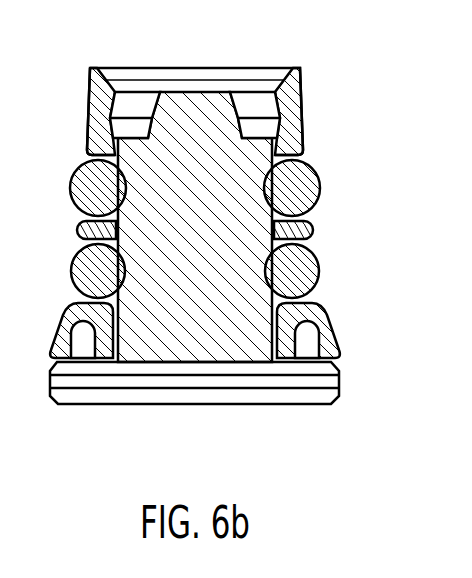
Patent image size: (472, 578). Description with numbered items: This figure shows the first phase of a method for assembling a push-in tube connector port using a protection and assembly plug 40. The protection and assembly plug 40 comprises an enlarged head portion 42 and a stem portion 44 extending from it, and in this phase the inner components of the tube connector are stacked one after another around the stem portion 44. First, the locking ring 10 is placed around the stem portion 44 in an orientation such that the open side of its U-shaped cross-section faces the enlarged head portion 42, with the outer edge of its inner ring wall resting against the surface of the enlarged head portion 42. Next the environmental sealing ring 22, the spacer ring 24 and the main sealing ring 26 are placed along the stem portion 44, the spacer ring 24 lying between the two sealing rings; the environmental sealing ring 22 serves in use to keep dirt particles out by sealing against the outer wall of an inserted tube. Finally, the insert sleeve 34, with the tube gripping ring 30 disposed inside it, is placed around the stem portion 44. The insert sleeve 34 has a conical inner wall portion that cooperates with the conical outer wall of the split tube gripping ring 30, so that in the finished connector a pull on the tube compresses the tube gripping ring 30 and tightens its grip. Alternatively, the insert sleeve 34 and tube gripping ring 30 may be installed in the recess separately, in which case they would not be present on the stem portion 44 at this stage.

The locking ring 10 is at (333, 331).
The environmental sealing ring 22 is at (320, 271).
The spacer ring 24 is at (313, 230).
The main sealing ring 26 is at (320, 187).
The tube gripping ring 30 is at (284, 70).
The insert sleeve 34 is at (302, 99).
The protection and assembly plug 40 is at (107, 442).
The enlarged head portion 42 is at (292, 405).
The stem portion 44 is at (243, 90).